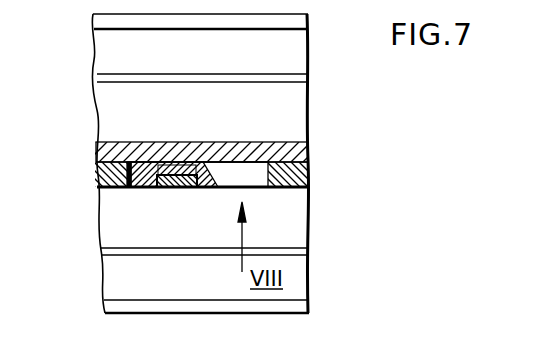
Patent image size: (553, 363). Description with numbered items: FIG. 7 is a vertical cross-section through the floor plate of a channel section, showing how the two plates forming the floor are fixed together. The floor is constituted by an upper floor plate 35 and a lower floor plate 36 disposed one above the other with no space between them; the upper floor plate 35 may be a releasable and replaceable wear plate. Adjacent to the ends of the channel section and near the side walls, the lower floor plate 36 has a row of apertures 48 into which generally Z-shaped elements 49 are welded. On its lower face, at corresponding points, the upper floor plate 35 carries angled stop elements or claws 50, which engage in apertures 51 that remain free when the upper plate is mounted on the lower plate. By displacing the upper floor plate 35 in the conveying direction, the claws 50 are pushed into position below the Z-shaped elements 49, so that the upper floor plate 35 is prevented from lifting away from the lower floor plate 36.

The upper floor plate 35 is at (177, 150).
The lower floor plate 36 is at (309, 188).
The aperture 48 is at (98, 179).
The Z-shaped element 49 is at (145, 190).
The angled stop element (claw) 50 is at (191, 190).
The aperture 51 is at (252, 178).